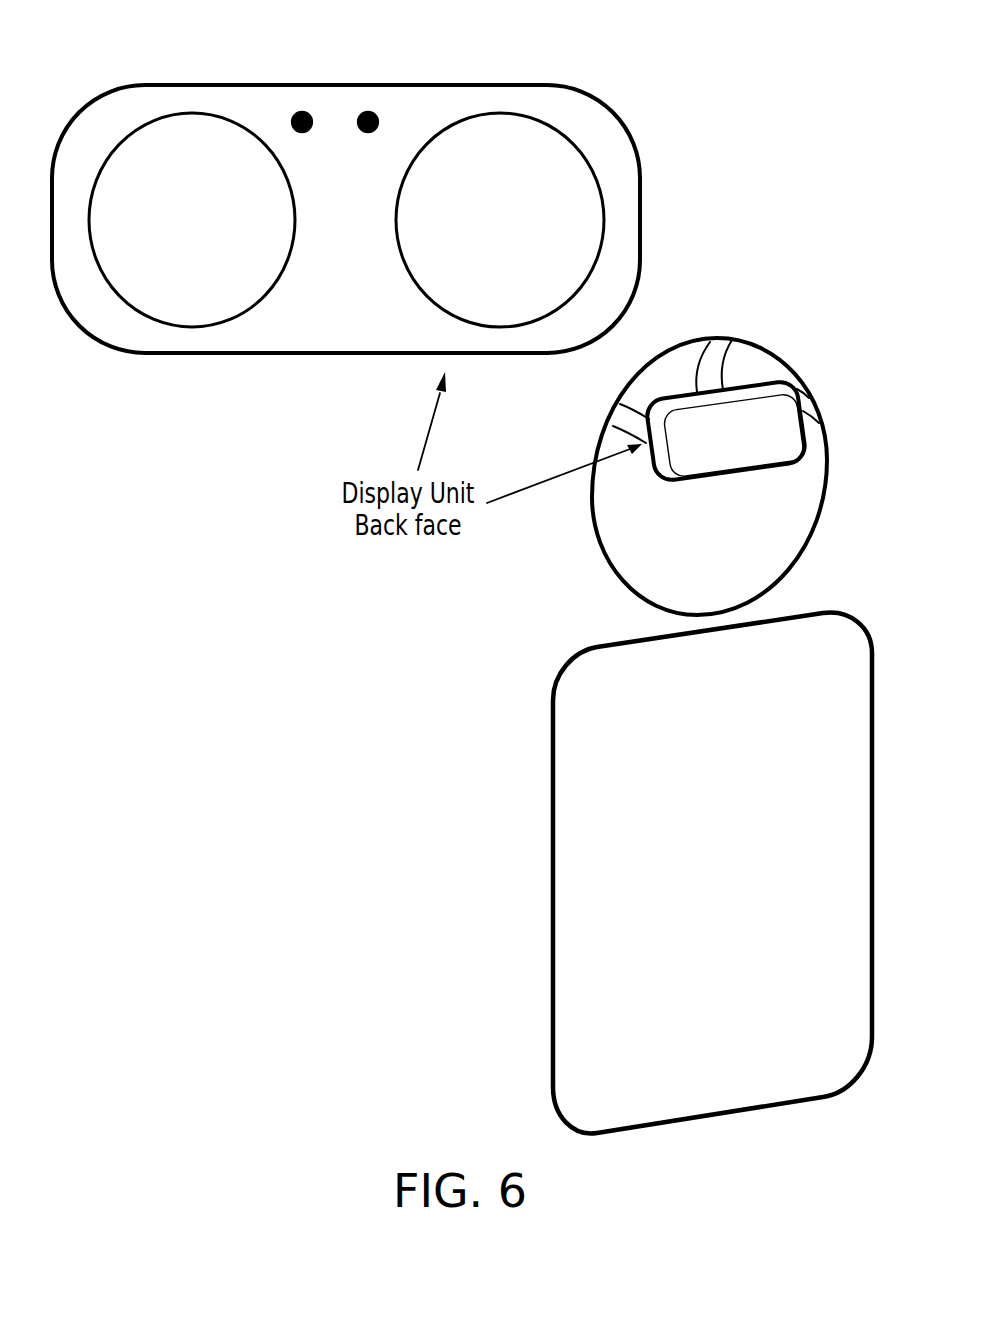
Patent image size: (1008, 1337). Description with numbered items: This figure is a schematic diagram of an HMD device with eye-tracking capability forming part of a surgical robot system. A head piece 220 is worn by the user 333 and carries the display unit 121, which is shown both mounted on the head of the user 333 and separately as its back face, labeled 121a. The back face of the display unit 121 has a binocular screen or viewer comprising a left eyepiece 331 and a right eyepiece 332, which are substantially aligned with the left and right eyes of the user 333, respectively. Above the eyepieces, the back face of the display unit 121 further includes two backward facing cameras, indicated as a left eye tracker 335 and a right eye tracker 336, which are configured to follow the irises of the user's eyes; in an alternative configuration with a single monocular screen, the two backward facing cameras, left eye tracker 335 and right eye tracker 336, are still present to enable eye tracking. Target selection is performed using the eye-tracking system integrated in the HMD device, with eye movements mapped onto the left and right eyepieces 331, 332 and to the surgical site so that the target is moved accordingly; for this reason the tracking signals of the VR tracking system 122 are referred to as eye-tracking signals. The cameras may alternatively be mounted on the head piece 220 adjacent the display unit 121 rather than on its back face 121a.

The display unit 121a is at (598, 102).
The display unit 121 is at (755, 388).
The VR tracking system 122 is at (741, 313).
The head piece 220 is at (614, 424).
The left eyepiece 331 is at (170, 236).
The right eyepiece 332 is at (480, 236).
The user 333 is at (553, 849).
The left eye tracker 335 is at (306, 111).
The right eye tracker 336 is at (371, 111).